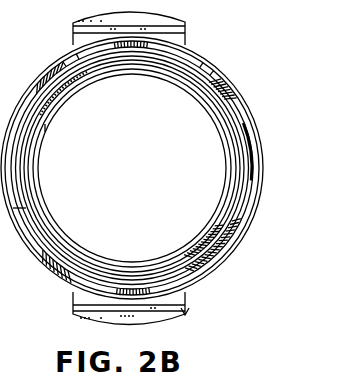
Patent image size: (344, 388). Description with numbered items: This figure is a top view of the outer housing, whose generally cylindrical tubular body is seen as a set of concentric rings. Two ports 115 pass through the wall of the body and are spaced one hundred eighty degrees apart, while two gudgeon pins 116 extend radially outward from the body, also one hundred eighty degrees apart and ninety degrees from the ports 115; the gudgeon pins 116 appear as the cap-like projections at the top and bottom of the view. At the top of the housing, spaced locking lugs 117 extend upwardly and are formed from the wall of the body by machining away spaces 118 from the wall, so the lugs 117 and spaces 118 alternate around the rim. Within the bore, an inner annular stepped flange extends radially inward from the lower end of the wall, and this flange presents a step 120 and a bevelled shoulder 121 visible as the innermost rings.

The port 115 is at (258, 139).
The gudgeon pin 116 is at (187, 26).
The locking lug 117 is at (228, 84).
The space 118 is at (194, 66).
The step 120 is at (38, 160).
The bevelled shoulder 121 is at (42, 134).